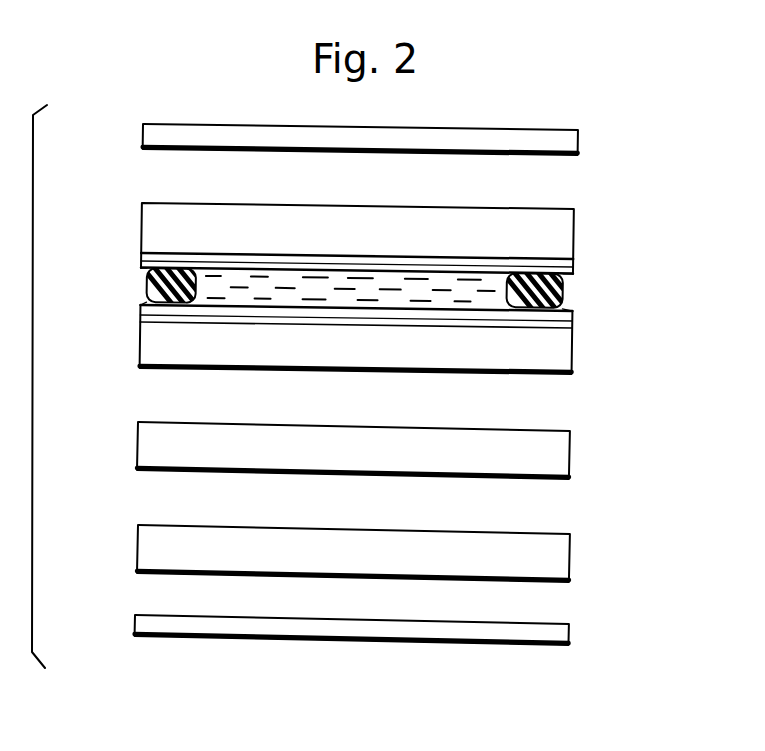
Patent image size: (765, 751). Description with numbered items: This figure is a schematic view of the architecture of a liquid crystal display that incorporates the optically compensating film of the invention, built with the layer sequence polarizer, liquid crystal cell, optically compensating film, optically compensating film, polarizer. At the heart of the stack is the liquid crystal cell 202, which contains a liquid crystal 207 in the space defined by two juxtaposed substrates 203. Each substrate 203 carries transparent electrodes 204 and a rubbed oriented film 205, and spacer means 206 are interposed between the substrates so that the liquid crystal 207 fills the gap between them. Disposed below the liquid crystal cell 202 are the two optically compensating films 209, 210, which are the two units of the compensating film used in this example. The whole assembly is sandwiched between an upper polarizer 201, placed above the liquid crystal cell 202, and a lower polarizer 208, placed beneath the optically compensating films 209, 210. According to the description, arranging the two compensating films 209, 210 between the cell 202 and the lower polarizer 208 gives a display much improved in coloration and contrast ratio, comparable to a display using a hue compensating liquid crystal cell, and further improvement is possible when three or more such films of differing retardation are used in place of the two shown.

The upper polarizer 201 is at (578, 141).
The liquid crystal cell 202 is at (358, 299).
The substrate 203 is at (143, 230).
The transparent electrode 204 is at (143, 262).
The rubbed oriented film 205 is at (143, 305).
The spacer means 206 is at (566, 290).
The liquid crystal 207 is at (455, 291).
The lower polarizer 208 is at (562, 632).
The optically compensating film 209 is at (562, 452).
The optically compensating film 210 is at (562, 553).